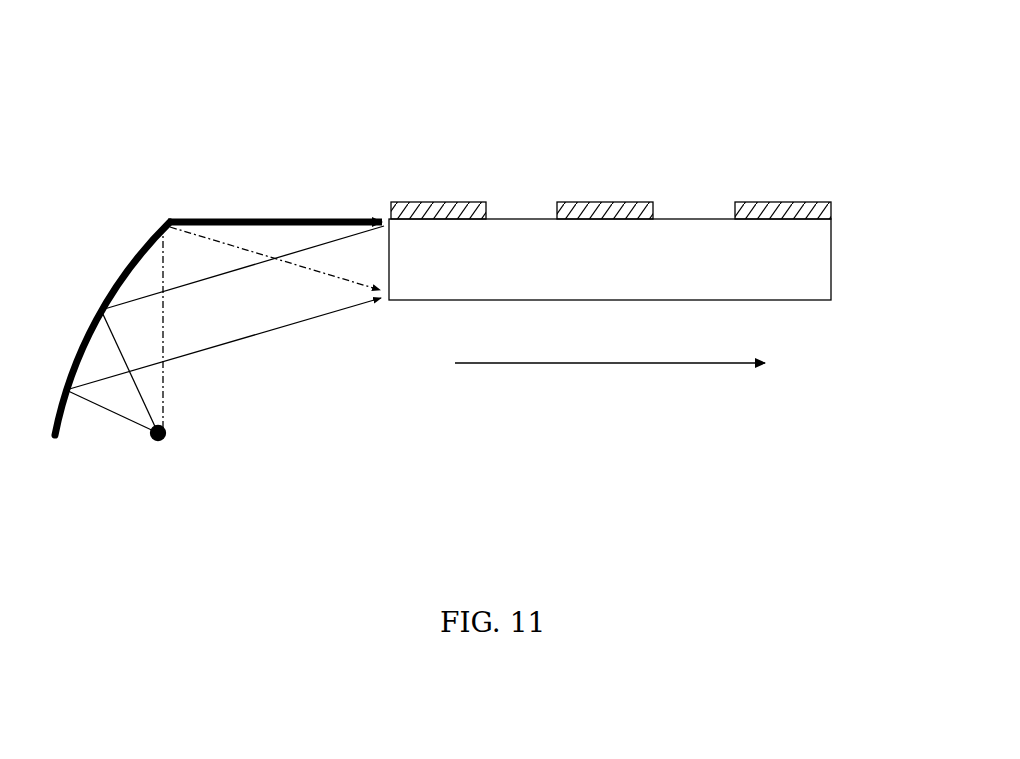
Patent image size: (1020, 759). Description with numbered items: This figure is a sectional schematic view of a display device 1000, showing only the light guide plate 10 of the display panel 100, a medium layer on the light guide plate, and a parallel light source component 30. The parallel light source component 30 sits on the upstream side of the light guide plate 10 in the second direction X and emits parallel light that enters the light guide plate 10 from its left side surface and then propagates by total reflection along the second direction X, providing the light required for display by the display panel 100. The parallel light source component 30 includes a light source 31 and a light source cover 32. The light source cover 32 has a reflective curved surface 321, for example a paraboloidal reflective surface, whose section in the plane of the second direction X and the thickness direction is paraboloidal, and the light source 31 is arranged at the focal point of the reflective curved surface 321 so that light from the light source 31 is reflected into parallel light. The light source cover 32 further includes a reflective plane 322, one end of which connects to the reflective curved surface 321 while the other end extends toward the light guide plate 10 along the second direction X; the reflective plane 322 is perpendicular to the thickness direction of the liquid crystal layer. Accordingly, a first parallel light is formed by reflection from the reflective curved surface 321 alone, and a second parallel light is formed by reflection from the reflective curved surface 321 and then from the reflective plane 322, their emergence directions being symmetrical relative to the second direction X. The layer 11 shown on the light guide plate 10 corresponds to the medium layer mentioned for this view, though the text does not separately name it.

The light guide plate 10 is at (813, 263).
The electrode pads 11 is at (650, 202).
The display panel 100 is at (656, 237).
The parallel light source component 30 is at (219, 264).
The light source 31 is at (164, 438).
The light source cover 32 is at (218, 225).
The reflective curved surface 321 is at (143, 228).
The reflective plane 322 is at (258, 218).
The display device 1000 is at (489, 264).